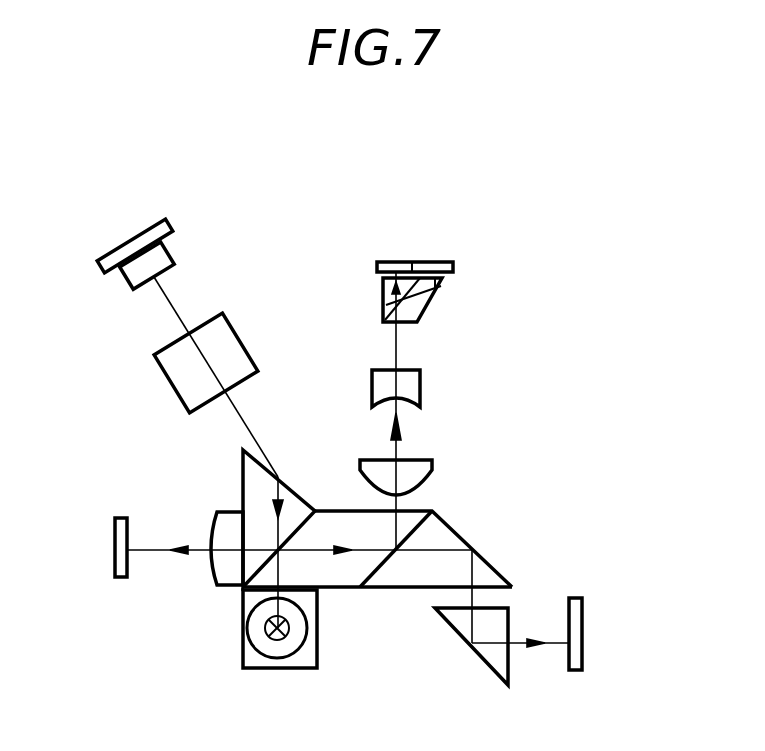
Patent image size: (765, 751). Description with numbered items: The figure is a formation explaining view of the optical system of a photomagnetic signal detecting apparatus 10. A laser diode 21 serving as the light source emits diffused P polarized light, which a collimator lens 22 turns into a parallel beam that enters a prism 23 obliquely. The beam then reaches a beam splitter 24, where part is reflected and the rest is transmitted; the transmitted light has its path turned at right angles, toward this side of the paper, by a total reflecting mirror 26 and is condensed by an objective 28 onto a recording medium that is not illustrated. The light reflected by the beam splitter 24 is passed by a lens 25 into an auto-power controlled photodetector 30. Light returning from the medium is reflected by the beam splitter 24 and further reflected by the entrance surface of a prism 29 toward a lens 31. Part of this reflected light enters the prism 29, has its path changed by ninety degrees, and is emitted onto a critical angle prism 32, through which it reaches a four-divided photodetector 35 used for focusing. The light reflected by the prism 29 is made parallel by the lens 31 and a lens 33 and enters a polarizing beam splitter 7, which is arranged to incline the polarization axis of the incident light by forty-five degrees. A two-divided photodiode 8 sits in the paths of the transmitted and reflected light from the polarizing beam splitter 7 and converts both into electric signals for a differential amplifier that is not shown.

The polarizing beam splitter 7 is at (423, 313).
The two-divided photodiode 8 is at (453, 265).
The photomagnetic signal detecting apparatus 10 is at (140, 378).
The laser diode 21 is at (130, 242).
The collimator lens 22 is at (247, 343).
The prism 23 is at (243, 475).
The beam splitter 24 is at (350, 588).
The lens 25 is at (215, 530).
The total reflecting mirror 26 is at (243, 627).
The objective 28 is at (263, 655).
The prism 29 is at (458, 533).
The auto-power controlled photodetector 30 is at (120, 518).
The lens 31 is at (432, 470).
The critical angle prism 32 is at (508, 625).
The lens 33 is at (422, 387).
The 4-divided photodetector 35 is at (583, 615).